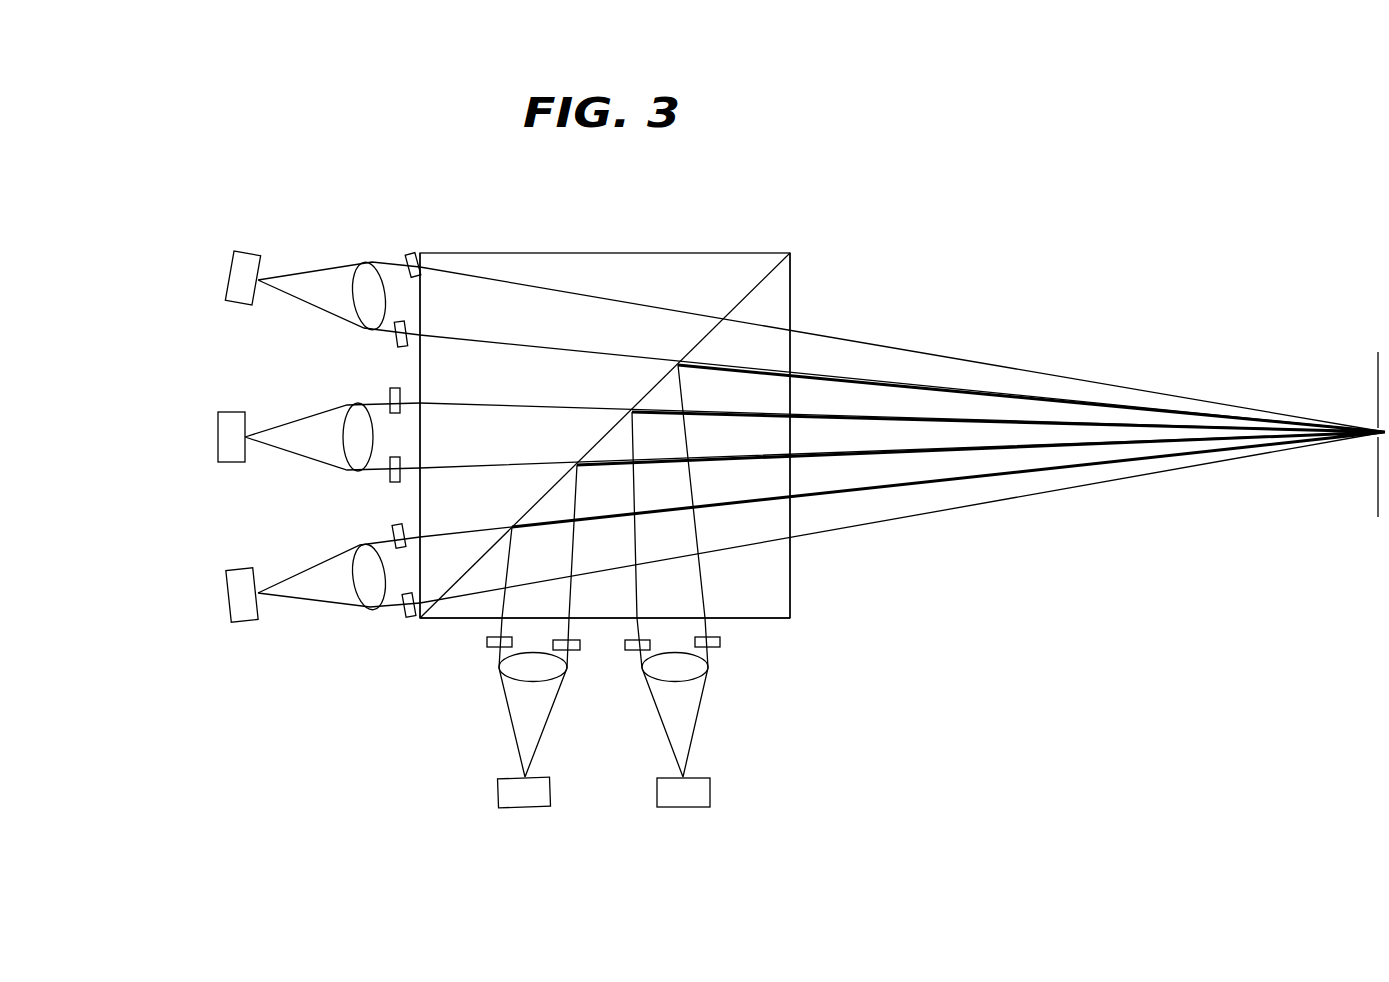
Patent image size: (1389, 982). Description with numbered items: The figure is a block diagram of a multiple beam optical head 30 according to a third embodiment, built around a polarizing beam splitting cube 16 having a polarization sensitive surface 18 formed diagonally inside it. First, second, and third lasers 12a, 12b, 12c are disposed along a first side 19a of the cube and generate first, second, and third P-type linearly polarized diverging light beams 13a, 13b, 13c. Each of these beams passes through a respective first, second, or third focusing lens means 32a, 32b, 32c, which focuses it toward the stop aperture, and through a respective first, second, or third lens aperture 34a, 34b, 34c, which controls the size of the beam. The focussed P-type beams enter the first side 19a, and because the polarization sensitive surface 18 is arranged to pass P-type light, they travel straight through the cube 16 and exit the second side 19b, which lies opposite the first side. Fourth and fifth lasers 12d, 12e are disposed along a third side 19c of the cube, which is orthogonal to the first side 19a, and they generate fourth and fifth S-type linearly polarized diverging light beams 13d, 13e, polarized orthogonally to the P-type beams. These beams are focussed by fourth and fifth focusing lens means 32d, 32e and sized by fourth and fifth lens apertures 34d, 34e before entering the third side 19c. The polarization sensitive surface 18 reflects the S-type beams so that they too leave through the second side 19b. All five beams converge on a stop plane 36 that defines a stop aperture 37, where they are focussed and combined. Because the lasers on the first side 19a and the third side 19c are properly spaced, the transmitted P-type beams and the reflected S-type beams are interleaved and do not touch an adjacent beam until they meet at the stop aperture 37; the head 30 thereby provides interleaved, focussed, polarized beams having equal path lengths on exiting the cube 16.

The multiple beam optical head 30 is at (534, 211).
The polarizing beam splitting cube 16 is at (651, 253).
The polarization sensitive surface 18 is at (753, 280).
The first side 19a is at (420, 297).
The second side 19b is at (790, 280).
The third side 19c is at (757, 618).
The first laser 12a is at (230, 277).
The second laser 12b is at (218, 437).
The third laser 12c is at (230, 592).
The fourth laser 12d is at (520, 808).
The fifth laser 12e is at (683, 808).
The first diverging light beam 13a is at (302, 300).
The second diverging light beam 13b is at (293, 450).
The third diverging light beam 13c is at (303, 600).
The fourth diverging light beam 13d is at (540, 735).
The fifth diverging light beam 13e is at (690, 738).
The first focusing lens means 32a is at (357, 277).
The second focusing lens means 32b is at (343, 422).
The third focusing lens means 32c is at (350, 562).
The fourth focusing lens means 32d is at (513, 682).
The fifth focusing lens means 32e is at (650, 690).
The first lens aperture 34a is at (415, 275).
The second lens aperture 34b is at (400, 413).
The third lens aperture 34c is at (403, 528).
The fourth lens aperture 34d is at (487, 645).
The fifth lens aperture 34e is at (720, 643).
The stop plane 36 is at (1377, 393).
The stop aperture 37 is at (1377, 443).